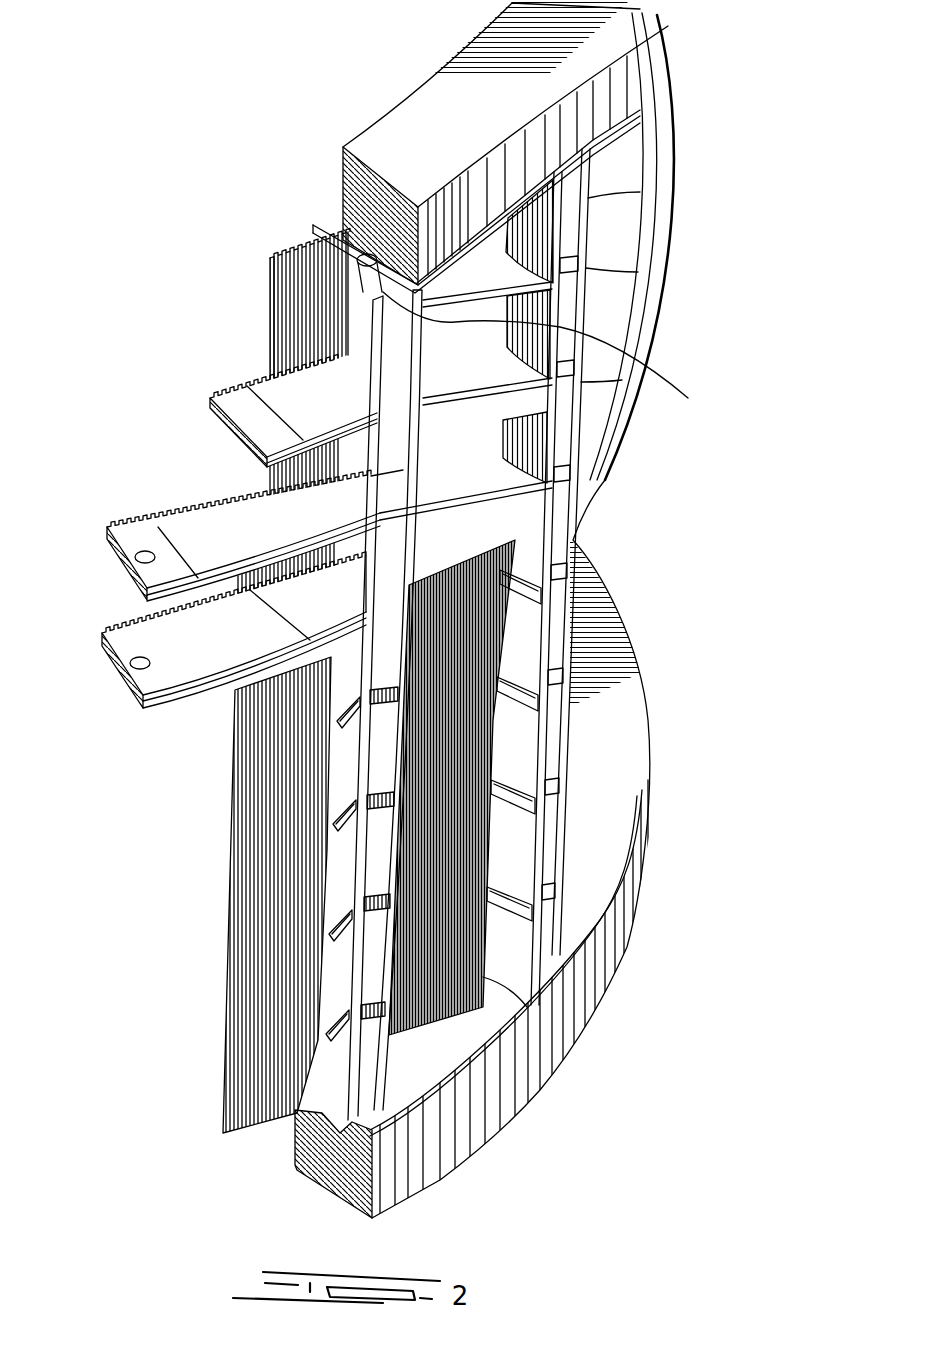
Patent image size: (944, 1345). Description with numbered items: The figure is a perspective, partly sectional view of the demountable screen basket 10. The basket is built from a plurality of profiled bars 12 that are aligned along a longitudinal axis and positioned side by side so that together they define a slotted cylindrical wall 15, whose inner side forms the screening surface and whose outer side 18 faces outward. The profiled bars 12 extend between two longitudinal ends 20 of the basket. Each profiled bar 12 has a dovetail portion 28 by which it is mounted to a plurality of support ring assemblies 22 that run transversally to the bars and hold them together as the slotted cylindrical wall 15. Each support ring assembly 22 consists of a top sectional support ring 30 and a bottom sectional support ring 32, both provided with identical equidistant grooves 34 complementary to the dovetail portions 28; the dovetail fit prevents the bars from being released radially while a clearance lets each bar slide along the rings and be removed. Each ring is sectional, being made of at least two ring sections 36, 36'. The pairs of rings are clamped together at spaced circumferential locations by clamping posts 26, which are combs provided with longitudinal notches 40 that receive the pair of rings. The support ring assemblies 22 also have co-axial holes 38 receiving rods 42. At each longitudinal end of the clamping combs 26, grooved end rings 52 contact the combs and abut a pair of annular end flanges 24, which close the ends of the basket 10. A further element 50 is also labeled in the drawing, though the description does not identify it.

The demountable screen basket 10 is at (197, 128).
The profiled bars 12 is at (233, 922).
The slotted cylindrical wall 15 is at (470, 850).
The outer side 18 is at (483, 980).
The longitudinal ends 20 is at (266, 260).
The support ring assemblies 22 is at (200, 545).
The annular end flanges 24 is at (428, 113).
The clamping posts 26 is at (553, 632).
The dovetail portion 28 is at (272, 283).
The top sectional support ring 30 is at (122, 632).
The bottom sectional support ring 32 is at (143, 668).
The grooves 34 is at (128, 522).
The ring section 36 is at (247, 727).
The ring section 36' is at (234, 668).
The co-axial holes 38 is at (140, 660).
The longitudinal notches 40 is at (522, 712).
The rods 42 is at (551, 356).
The tie rod 50 is at (568, 172).
The end rings 52 is at (346, 248).